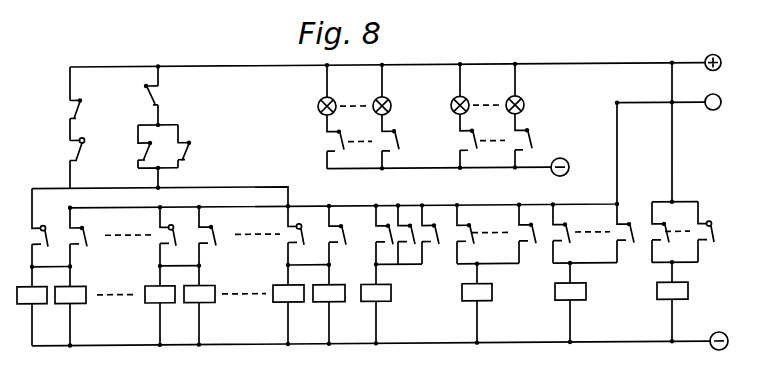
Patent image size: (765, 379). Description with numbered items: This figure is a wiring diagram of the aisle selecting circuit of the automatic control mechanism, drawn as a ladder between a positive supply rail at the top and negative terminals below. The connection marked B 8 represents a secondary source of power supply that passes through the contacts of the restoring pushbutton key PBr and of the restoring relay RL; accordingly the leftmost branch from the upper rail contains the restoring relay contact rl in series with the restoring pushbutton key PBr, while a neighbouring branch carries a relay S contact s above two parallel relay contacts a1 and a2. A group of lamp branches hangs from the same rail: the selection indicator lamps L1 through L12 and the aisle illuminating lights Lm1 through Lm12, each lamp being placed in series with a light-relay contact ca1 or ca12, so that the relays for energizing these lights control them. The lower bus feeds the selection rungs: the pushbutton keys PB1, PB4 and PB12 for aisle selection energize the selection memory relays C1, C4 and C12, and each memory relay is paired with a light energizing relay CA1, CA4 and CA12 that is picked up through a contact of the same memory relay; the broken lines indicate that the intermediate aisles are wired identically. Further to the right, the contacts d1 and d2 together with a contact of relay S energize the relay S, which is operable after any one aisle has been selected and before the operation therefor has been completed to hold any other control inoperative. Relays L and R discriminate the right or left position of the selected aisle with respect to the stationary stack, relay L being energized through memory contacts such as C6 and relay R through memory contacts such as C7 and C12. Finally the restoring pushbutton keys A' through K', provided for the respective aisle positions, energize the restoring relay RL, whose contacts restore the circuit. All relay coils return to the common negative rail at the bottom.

The secondary power supply connection B is at (713, 102).
The restoring relay contact rl is at (82, 118).
The restoring pushbutton key PBr is at (90, 163).
The relay S contact s is at (145, 104).
The relay A contact a1 is at (150, 146).
The relay A contact a2 is at (191, 146).
The selection indicator lamp L1 is at (318, 90).
The selection indicator lamp L12 is at (372, 90).
The aisle illuminating light Lm1 is at (450, 89).
The aisle illuminating light Lm12 is at (528, 89).
The relay CA1 contact ca1 is at (389, 141).
The relay CA12 contact ca12 is at (458, 141).
The aisle selection pushbutton key PB1 is at (44, 237).
The selection memory relay C1 is at (249, 275).
The light energizing relay CA1 is at (70, 315).
The aisle selection pushbutton key PB4 is at (172, 246).
The selection memory relay C4 is at (187, 276).
The light energizing relay CA4 is at (199, 314).
The aisle selection pushbutton key PB12 is at (303, 245).
The selection memory relay C12 is at (458, 274).
The light energizing relay CA12 is at (329, 314).
The relay D contact d1 is at (384, 245).
The relay D contact d2 is at (406, 234).
The holding relay S is at (400, 274).
The selection memory relay contact C6 is at (530, 234).
The left position discriminating relay L is at (477, 303).
The selection memory relay contact C7 is at (567, 233).
The right position discriminating relay R is at (570, 302).
The restoring pushbutton key A' is at (666, 232).
The restoring pushbutton key K' is at (711, 231).
The restoring relay RL is at (672, 301).